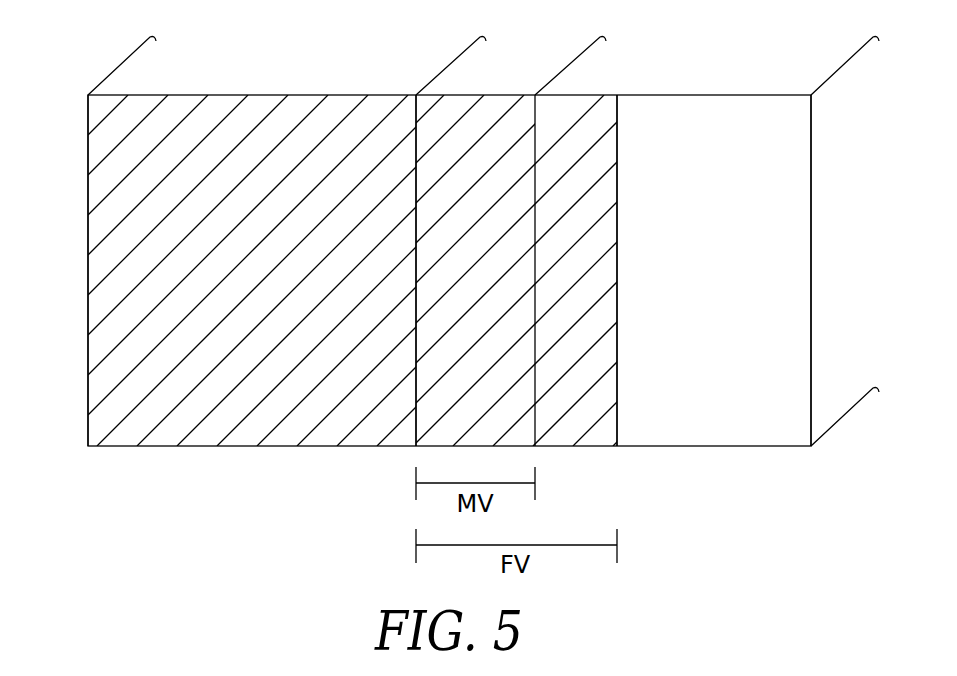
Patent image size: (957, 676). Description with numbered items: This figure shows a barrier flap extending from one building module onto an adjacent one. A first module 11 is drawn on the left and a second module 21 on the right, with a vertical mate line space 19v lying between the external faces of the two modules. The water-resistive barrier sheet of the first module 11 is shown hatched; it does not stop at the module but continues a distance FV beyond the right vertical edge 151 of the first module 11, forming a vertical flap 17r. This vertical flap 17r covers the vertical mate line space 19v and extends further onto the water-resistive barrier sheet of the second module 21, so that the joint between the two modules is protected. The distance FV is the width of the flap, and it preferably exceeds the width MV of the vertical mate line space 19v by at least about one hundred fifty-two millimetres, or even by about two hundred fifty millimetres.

The first module 11 is at (95, 233).
The vertical mate line space 19v is at (512, 68).
The vertical flap 17r is at (432, 108).
The second module 21 is at (800, 246).
The right vertical edge 151 is at (414, 396).